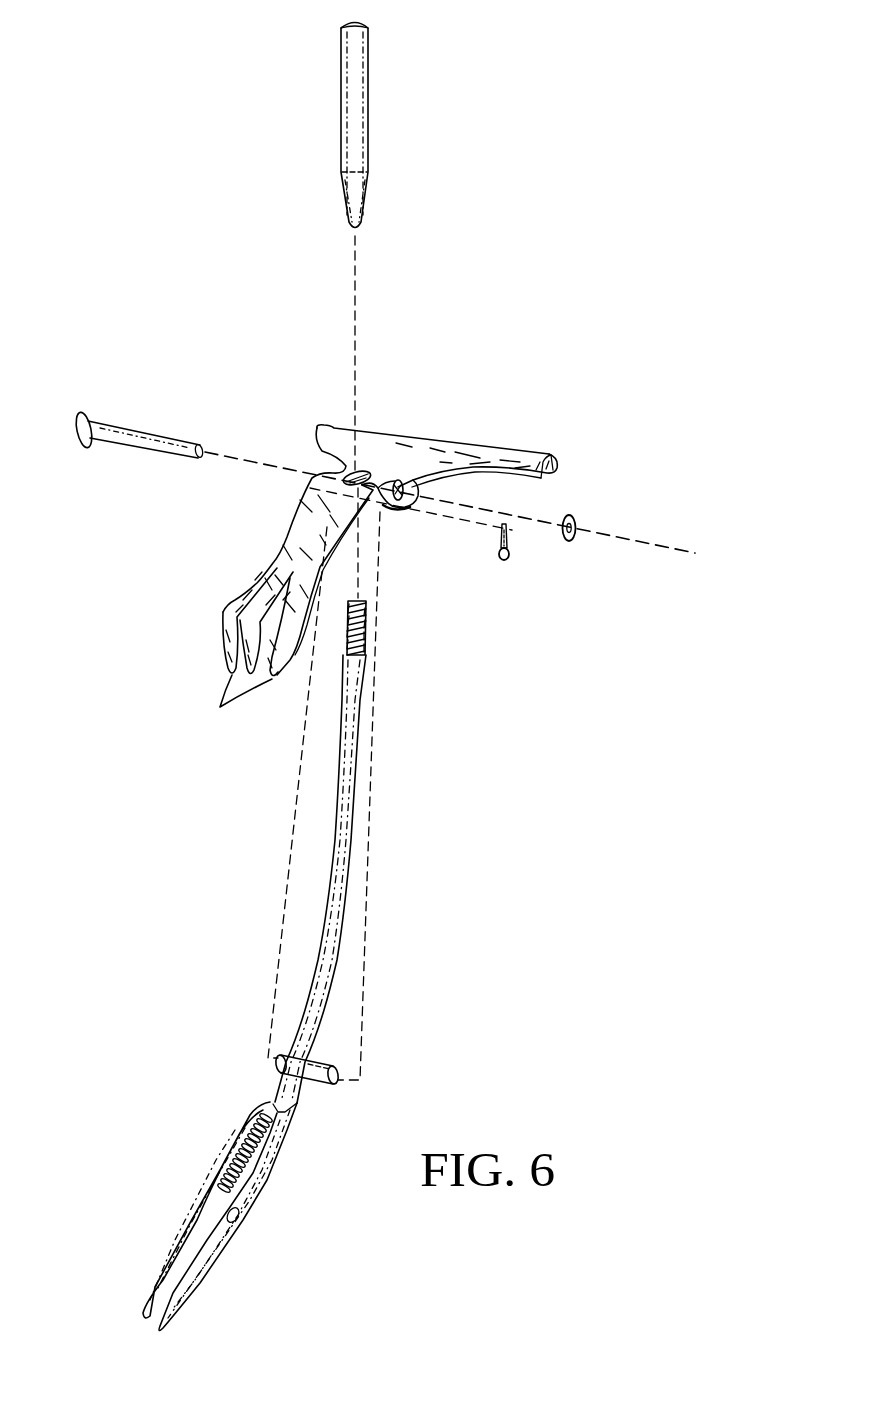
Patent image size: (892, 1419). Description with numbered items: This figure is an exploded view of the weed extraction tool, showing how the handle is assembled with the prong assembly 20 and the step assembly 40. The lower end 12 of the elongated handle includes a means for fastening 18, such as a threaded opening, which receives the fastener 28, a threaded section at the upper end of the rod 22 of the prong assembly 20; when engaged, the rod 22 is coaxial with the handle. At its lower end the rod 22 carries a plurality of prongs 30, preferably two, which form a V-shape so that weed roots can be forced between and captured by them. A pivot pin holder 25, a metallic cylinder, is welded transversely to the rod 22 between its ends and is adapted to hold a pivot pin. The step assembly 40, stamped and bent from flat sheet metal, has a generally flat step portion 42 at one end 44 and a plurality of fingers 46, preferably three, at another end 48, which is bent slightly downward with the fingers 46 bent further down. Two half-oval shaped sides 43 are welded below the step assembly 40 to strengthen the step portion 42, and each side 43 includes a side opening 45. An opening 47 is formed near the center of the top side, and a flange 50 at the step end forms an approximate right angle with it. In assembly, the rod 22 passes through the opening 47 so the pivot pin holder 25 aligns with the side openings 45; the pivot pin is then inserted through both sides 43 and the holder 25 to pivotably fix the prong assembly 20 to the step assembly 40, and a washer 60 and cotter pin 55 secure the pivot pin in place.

The lower end 12 is at (308, 152).
The means for fastening 18 is at (356, 192).
The prong assembly 20 is at (388, 872).
The rod 22 is at (368, 43).
The pivot pin holder 25 is at (312, 1090).
The fastener 28 is at (362, 634).
The prongs 30 is at (177, 1293).
The step assembly 40 is at (306, 444).
The step portion 42 is at (496, 446).
The sides 43 is at (392, 508).
The one end 44 is at (123, 423).
The side opening 45 is at (401, 481).
The fingers 46 is at (239, 646).
The opening 47 is at (360, 472).
The another end 48 is at (222, 563).
The flange 50 is at (563, 463).
The cotter pin 55 is at (505, 530).
The washer 60 is at (568, 514).